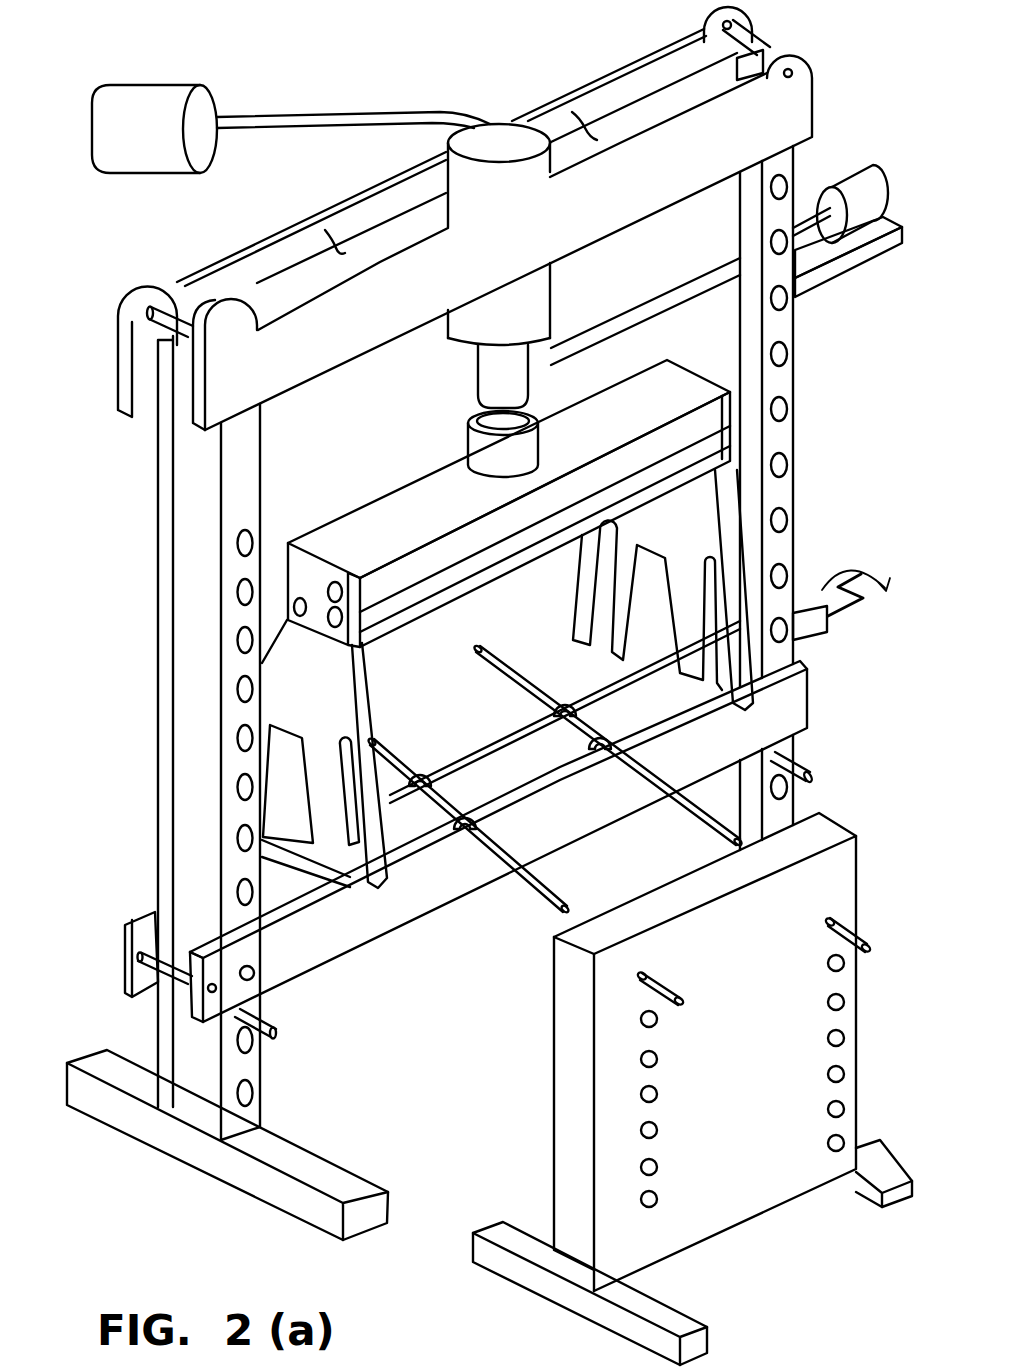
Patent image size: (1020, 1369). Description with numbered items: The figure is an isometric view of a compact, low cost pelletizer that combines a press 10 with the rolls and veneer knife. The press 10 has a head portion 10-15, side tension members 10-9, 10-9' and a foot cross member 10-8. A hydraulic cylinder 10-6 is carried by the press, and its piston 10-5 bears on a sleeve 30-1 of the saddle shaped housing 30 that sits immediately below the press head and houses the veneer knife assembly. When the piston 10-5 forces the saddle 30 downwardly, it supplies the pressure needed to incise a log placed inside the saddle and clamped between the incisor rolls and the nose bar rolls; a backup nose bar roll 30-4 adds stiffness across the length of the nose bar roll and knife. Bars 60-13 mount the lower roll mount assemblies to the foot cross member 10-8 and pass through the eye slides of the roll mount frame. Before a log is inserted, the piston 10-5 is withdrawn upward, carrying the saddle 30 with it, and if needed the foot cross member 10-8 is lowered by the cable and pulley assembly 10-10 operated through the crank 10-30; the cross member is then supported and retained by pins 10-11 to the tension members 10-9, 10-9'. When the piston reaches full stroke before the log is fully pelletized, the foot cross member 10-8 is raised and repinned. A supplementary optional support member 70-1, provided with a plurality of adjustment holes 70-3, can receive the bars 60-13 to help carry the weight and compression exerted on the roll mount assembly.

The press 10 is at (792, 34).
The piston 10-5 is at (478, 388).
The hydraulic cylinder 10-6 is at (492, 125).
The foot cross member 10-8 is at (182, 1020).
The side tension member 10-9 is at (171, 738).
The side tension member 10-9' is at (804, 498).
The cable and pulley assembly 10-10 is at (132, 296).
The pins 10-11 is at (276, 1028).
The head portion 10-15 is at (728, 224).
The crank 10-30 is at (850, 625).
The saddle shaped housing 30 is at (368, 466).
The sleeve 30-1 is at (540, 422).
The backup nose bar roll 30-4 is at (668, 472).
The bars 60-13 is at (681, 826).
The supplementary optional support member 70-1 is at (552, 1137).
The plate holes 70-3 is at (661, 1130).